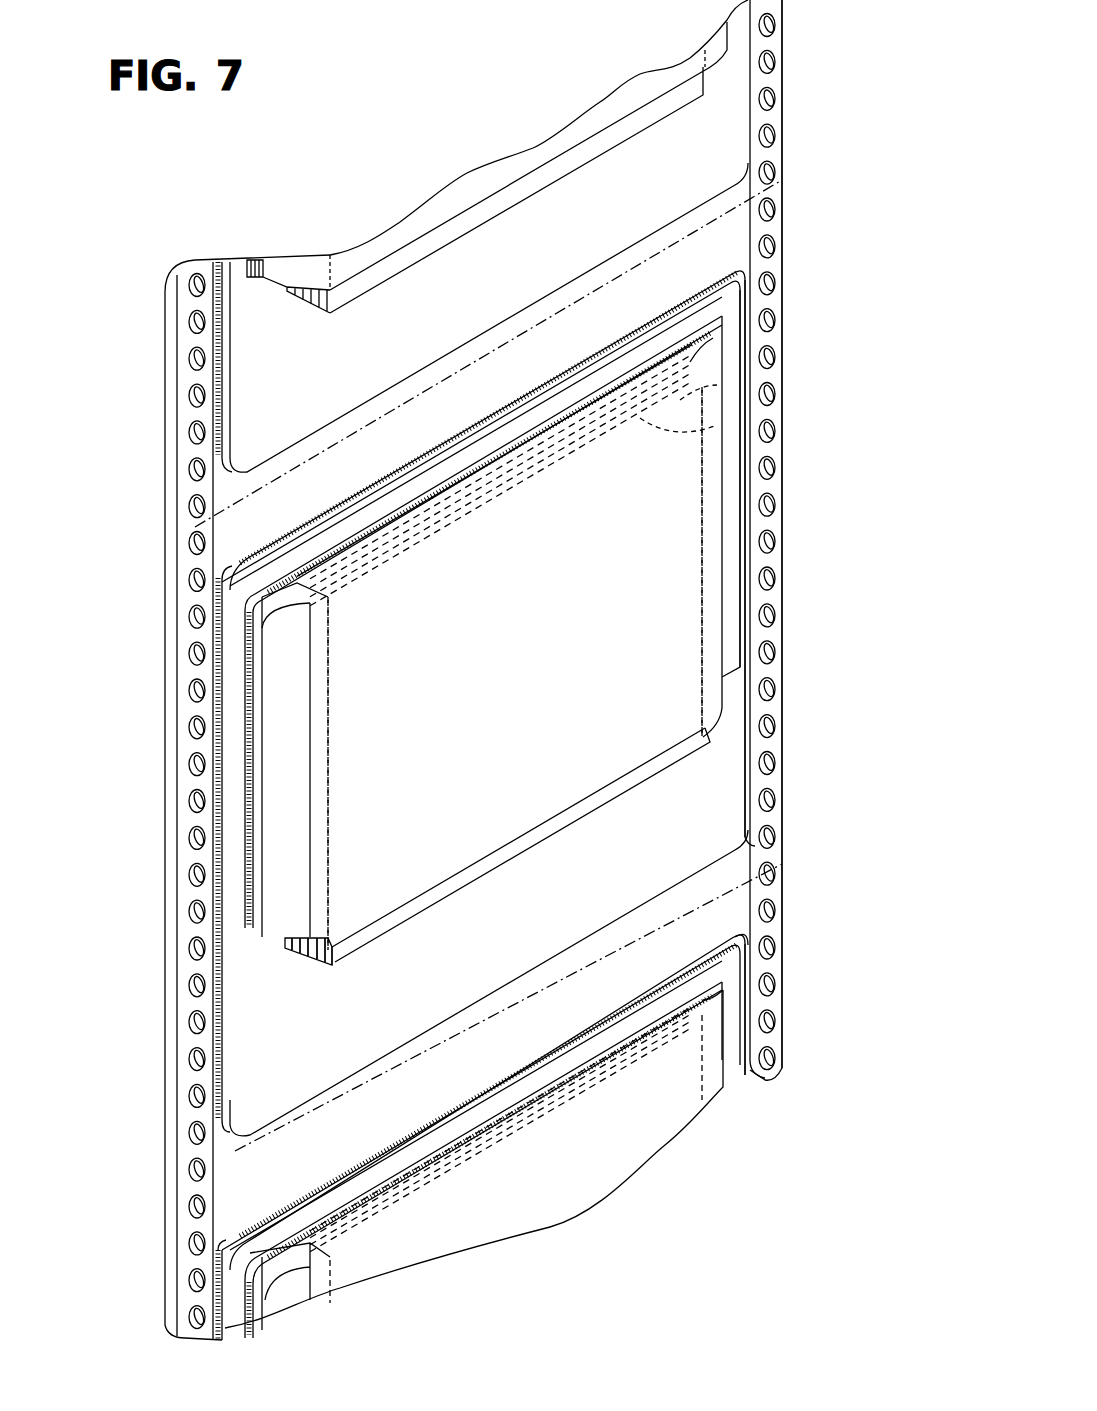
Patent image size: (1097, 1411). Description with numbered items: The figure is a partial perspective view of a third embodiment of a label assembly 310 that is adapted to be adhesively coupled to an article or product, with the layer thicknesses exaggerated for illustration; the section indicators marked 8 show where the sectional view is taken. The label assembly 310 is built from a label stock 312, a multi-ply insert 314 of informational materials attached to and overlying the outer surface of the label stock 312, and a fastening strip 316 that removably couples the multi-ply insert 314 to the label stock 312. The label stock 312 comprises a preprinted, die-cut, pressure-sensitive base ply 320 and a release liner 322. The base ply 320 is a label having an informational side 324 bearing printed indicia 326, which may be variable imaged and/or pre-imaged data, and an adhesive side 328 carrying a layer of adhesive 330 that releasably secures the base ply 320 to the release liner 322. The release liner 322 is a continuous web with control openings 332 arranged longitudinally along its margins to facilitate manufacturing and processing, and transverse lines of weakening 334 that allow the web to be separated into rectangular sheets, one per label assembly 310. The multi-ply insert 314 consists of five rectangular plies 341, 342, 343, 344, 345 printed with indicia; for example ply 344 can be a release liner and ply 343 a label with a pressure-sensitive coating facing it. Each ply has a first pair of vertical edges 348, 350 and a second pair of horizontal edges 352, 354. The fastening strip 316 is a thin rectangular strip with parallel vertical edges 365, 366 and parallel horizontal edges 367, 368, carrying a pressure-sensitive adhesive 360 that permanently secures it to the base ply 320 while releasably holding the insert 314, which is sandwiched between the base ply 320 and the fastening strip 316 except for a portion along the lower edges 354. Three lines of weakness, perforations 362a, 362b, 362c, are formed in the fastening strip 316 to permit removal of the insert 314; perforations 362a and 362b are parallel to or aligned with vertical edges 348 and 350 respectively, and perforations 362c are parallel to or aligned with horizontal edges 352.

The label assembly 310 is at (305, 236).
The label stock 312 is at (757, 305).
The multi-ply insert 314 is at (352, 304).
The fastening strip 316 is at (413, 237).
The base ply 320 is at (748, 158).
The release liner 322 is at (783, 54).
The informational side 324 is at (290, 426).
The indicia 326 is at (600, 238).
The adhesive side 328 is at (283, 530).
The layer of adhesive 330 is at (238, 520).
The control openings 332 is at (775, 138).
The transverse lines of weakening 334 is at (225, 505).
The ply 341 is at (324, 962).
The ply 342 is at (316, 957).
The ply 343 is at (306, 952).
The ply 344 is at (296, 948).
The ply 345 is at (286, 944).
The vertical edge 348 is at (332, 966).
The vertical edge 350 is at (703, 740).
The horizontal edge 352 is at (640, 423).
The lower edge 354 is at (385, 940).
The pressure-sensitive adhesive 360 is at (247, 262).
The perforations 362a is at (328, 690).
The perforations 362b is at (703, 540).
The perforations 362c is at (680, 400).
The vertical edge 365 is at (245, 745).
The vertical edge 366 is at (740, 630).
The horizontal edge 367 is at (297, 583).
The horizontal edge 368 is at (663, 757).
The section line 8- 8 is at (147, 858).